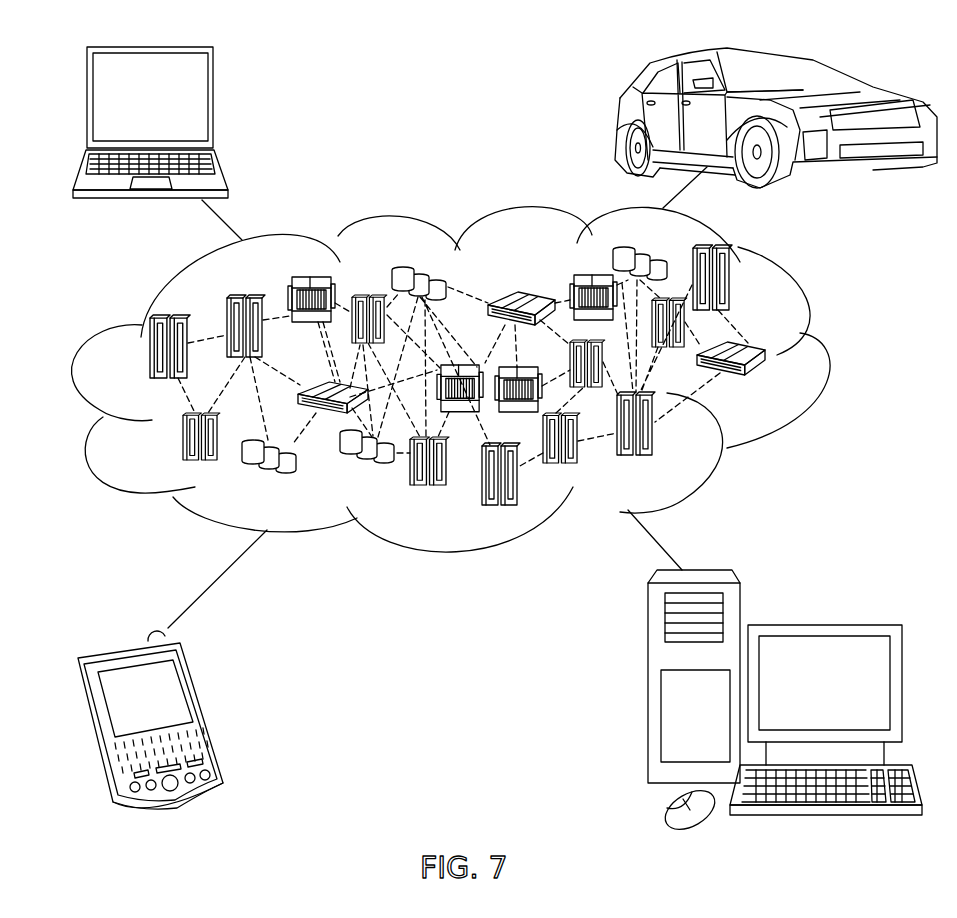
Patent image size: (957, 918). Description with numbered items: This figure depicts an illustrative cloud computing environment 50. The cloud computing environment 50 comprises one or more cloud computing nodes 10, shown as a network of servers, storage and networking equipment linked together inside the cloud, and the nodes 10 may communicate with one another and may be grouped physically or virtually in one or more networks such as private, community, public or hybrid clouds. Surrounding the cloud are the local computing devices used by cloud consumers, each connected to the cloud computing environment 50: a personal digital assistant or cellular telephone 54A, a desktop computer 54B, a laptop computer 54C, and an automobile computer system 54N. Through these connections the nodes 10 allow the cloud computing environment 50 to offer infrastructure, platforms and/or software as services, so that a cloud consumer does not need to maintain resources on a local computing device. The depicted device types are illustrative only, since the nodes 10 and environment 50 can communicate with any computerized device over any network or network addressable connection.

The cloud computing node 10 is at (777, 384).
The cloud computing environment 50 is at (822, 357).
The personal digital assistant or cellular telephone 54A is at (205, 713).
The desktop computer 54B is at (822, 625).
The laptop computer 54C is at (216, 106).
The automobile computer system 54N is at (622, 125).